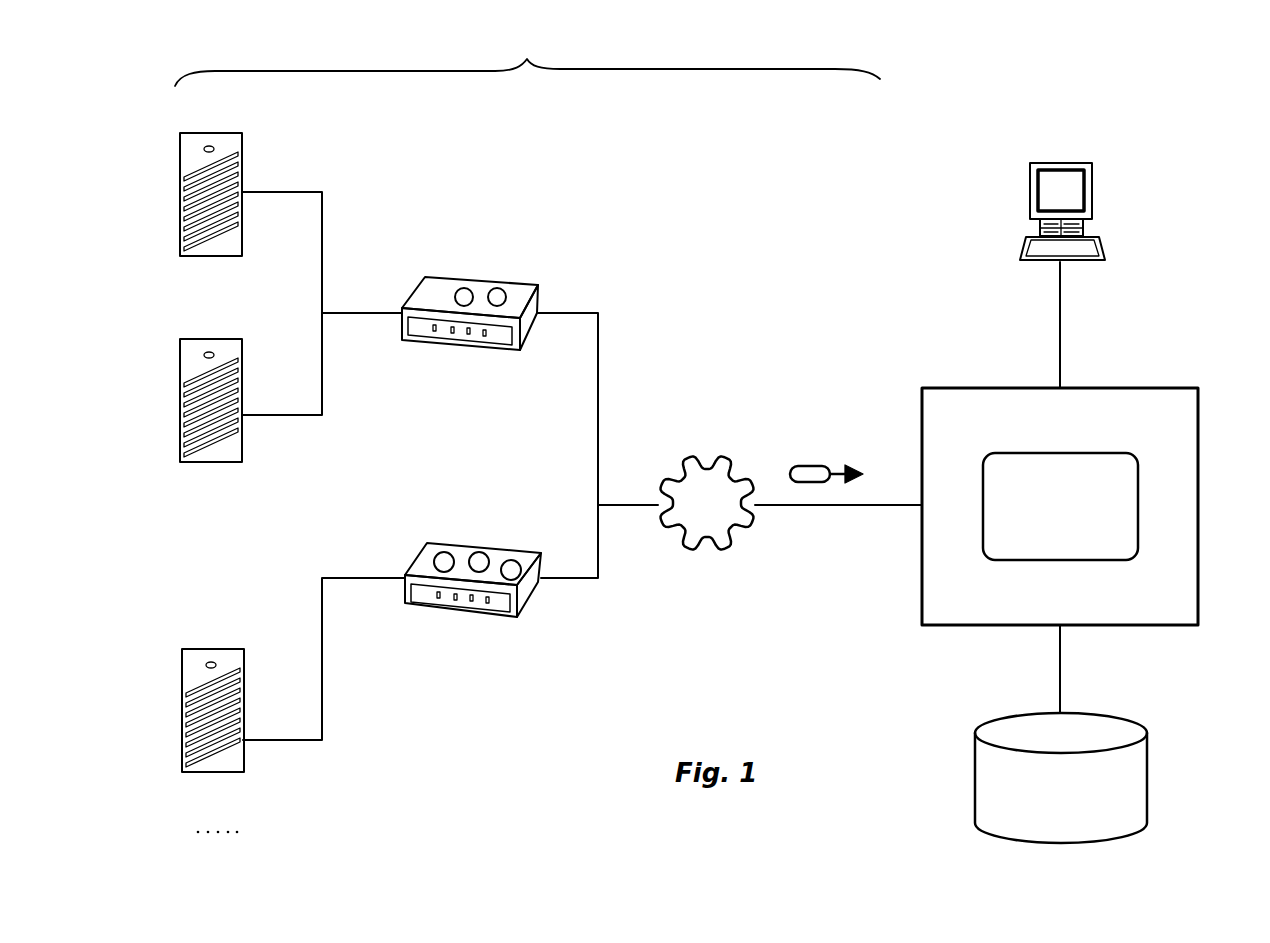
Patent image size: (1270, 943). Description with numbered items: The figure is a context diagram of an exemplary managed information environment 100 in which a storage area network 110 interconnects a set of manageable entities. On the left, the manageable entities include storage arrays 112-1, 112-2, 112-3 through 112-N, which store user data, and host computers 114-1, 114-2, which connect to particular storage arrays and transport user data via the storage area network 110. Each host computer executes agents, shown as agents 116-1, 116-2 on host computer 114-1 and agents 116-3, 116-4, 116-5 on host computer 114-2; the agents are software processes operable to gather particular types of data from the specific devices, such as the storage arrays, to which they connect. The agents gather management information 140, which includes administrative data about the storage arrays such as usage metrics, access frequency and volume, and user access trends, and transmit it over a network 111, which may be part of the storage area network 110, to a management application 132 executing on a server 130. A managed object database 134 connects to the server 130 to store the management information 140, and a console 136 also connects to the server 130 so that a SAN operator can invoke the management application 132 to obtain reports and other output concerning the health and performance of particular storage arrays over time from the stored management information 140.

The managed information environment 100 is at (550, 786).
The storage area network 110 is at (527, 59).
The network 111 is at (705, 552).
The storage array 112-1 is at (241, 133).
The storage array 112-2 is at (243, 339).
The storage array 112-3 is at (243, 649).
The storage array 112-N is at (248, 833).
The host computer 114-1 is at (423, 280).
The host computer 114-2 is at (425, 546).
The agent 116-1 is at (465, 288).
The agent 116-2 is at (500, 288).
The agent 116-3 is at (444, 552).
The agent 116-4 is at (479, 552).
The agent 116-5 is at (511, 560).
The server 130 is at (921, 388).
The management application 132 is at (988, 454).
The managed object database 134 is at (975, 735).
The console 136 is at (1030, 211).
The management information 140 is at (790, 474).